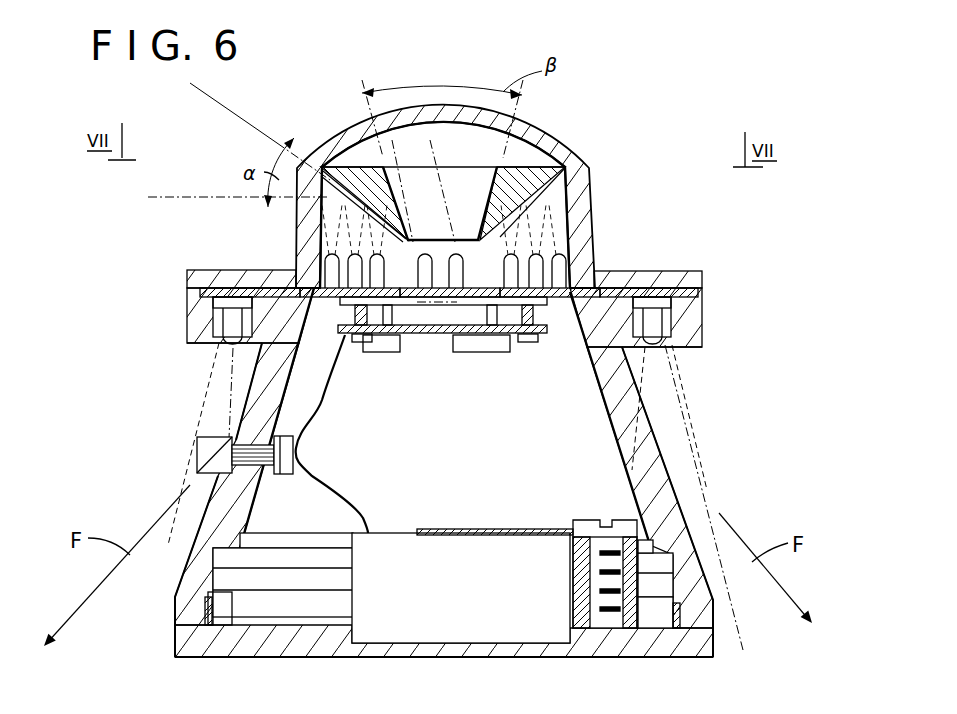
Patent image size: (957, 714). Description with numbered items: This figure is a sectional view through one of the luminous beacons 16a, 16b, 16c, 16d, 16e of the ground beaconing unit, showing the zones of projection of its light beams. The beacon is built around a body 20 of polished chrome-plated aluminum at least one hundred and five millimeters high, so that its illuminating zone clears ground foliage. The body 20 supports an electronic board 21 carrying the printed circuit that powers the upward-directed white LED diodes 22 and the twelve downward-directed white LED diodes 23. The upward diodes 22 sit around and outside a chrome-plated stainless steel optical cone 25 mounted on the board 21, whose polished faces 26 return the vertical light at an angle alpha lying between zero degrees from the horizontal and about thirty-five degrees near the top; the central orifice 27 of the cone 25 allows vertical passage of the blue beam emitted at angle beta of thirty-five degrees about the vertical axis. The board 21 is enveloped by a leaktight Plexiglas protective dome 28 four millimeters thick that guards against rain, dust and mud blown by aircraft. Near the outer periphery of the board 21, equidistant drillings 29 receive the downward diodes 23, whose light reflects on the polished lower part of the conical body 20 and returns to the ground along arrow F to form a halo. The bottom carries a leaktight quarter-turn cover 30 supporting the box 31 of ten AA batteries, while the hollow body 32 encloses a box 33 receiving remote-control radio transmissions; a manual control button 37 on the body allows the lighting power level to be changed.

The luminous beacon 16a is at (707, 296).
The luminous beacon 16b is at (350, 292).
The luminous beacon 16c is at (450, 292).
The luminous beacon 16d is at (550, 292).
The luminous beacon 16e is at (649, 292).
The body 20 is at (692, 320).
The electronic board 21 is at (270, 270).
The upward-directed LED diodes 22 is at (322, 240).
The downward-directed LED diodes 23 is at (235, 343).
The optical cone 25 is at (527, 190).
The faces 26 is at (520, 222).
The central orifice 27 is at (503, 193).
The protective dome 28 is at (578, 162).
The drillings 29 is at (210, 322).
The cover 30 is at (667, 643).
The battery box 31 is at (464, 605).
The hollow body 32 is at (380, 503).
The radio receiving box 33 is at (488, 343).
The manual control button 37 is at (205, 452).